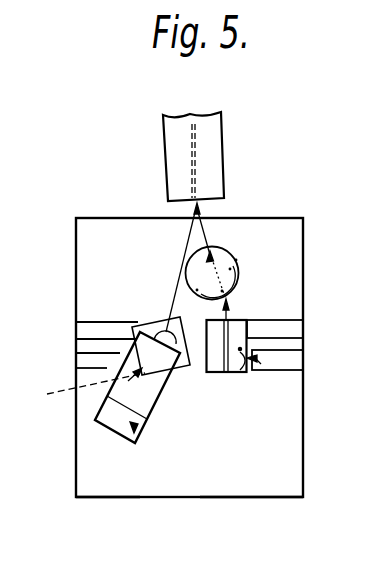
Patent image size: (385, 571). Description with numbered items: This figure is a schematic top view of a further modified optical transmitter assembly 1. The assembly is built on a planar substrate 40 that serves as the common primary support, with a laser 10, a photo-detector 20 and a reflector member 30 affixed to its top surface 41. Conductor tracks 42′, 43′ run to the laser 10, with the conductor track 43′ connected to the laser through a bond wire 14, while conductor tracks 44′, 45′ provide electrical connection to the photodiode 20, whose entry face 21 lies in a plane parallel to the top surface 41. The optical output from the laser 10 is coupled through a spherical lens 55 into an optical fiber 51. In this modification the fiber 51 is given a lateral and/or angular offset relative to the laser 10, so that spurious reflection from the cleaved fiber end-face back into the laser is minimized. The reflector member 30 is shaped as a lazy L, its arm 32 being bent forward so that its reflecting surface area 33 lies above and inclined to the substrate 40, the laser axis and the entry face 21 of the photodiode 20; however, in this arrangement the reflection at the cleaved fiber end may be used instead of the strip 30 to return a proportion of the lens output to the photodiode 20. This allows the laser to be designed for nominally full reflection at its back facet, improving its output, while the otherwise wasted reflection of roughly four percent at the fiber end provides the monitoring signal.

The optical transmitter assembly 1 is at (191, 505).
The laser 10 is at (213, 373).
The bond wire 14 is at (240, 372).
The photo-detector 20 is at (143, 322).
The entry face 21 is at (157, 294).
The reflector member 30 is at (137, 443).
The arm 32 is at (132, 403).
The reflecting surface area 33 is at (85, 389).
The substrate 40 is at (102, 497).
The top surface 41 is at (250, 480).
The conductor track 42′ is at (295, 361).
The conductor track 43′ is at (295, 329).
The conductor track 44′ is at (88, 328).
The conductor track 45′ is at (85, 360).
The optical fiber 51 is at (208, 158).
The lens 55 is at (228, 256).